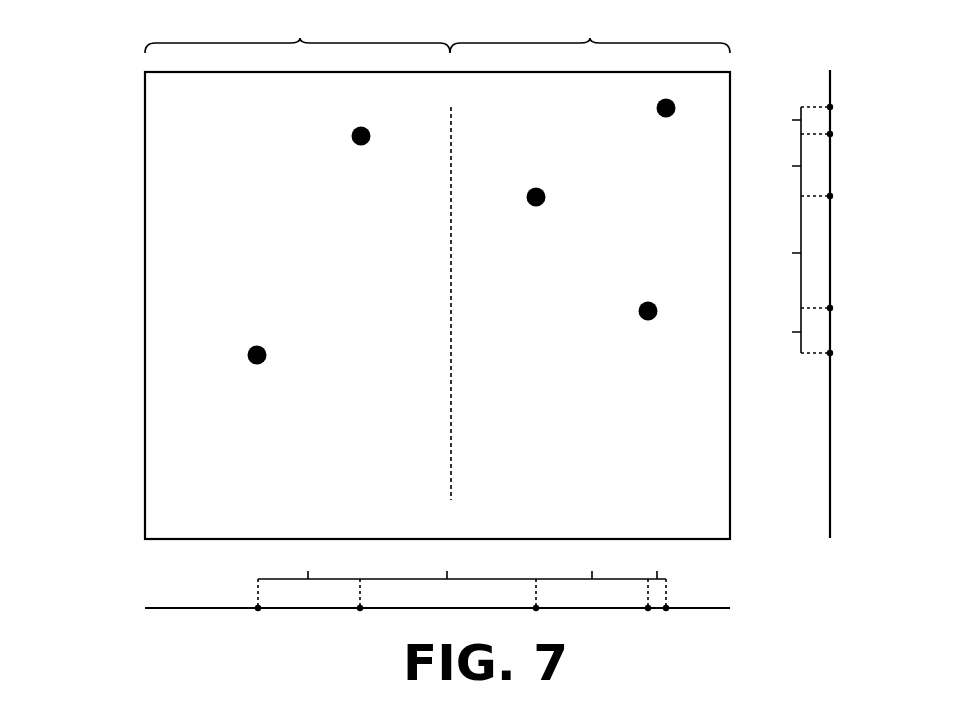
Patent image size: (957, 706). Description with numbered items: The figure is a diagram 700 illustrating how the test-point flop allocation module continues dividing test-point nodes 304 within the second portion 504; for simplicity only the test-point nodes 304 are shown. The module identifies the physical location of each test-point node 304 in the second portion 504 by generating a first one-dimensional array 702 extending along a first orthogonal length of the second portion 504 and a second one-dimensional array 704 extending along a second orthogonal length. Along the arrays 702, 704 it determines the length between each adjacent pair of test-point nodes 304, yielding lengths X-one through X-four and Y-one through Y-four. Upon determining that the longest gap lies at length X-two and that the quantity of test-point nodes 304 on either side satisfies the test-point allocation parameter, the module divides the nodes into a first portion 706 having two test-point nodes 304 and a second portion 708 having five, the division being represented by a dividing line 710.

The diagram 700 is at (96, 30).
The second portion 504 is at (145, 157).
The test-point nodes 304 is at (366, 130).
The first portion 706 is at (297, 32).
The second portion 708 is at (590, 32).
The dividing line 710 is at (451, 323).
The first one-dimensional array 702 is at (830, 90).
The second one-dimensional array 704 is at (710, 608).